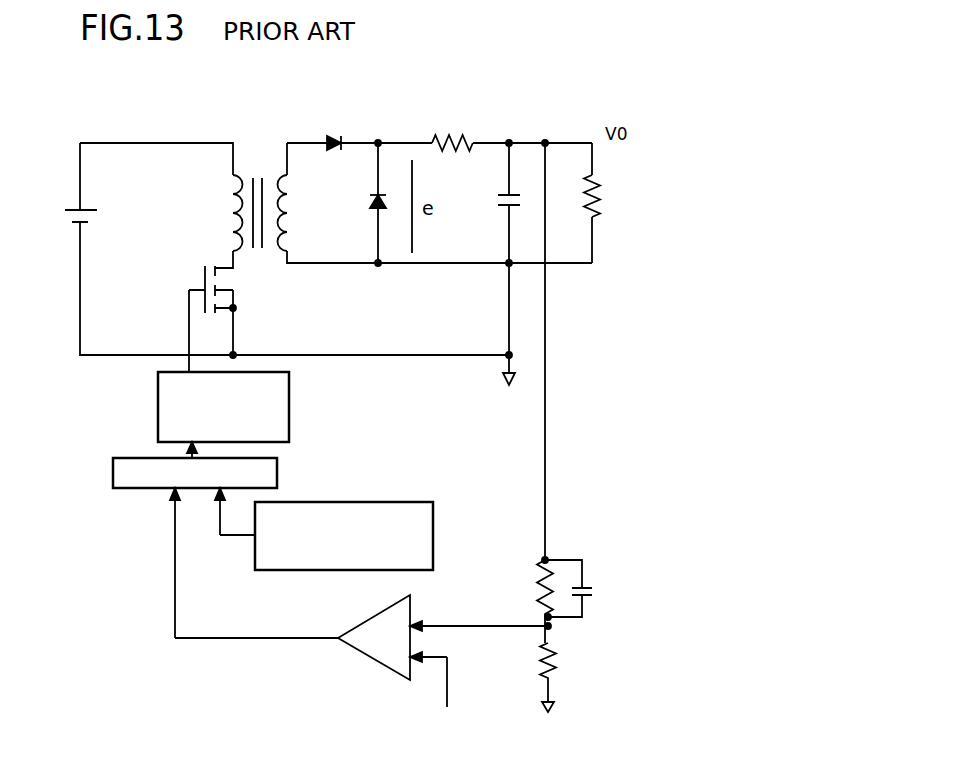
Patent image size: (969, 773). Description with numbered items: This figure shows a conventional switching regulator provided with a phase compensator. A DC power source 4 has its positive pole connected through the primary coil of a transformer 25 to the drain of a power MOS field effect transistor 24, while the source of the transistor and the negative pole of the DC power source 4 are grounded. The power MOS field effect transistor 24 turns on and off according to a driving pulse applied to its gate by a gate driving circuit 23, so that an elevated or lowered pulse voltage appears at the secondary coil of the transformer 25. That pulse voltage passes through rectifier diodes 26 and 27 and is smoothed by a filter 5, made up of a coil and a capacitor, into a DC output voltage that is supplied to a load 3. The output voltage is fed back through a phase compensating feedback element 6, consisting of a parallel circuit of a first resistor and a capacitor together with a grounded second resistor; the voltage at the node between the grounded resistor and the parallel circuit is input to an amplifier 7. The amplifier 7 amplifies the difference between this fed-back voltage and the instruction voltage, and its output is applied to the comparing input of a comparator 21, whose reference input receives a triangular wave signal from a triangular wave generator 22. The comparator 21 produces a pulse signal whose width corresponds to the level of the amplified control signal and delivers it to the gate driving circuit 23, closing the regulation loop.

The load 3 is at (599, 178).
The DC power source 4 is at (76, 208).
The filter 5 is at (522, 116).
The phase compensating feedback element 6 is at (618, 556).
The amplifier 7 is at (387, 602).
The comparator 21 is at (278, 470).
The triangular wave generator 22 is at (378, 502).
The gate driving circuit 23 is at (290, 382).
The power MOS field effect transistor 24 is at (203, 278).
The transformer 25 is at (289, 209).
The rectifier diode 26 is at (333, 136).
The rectifier diode 27 is at (370, 206).